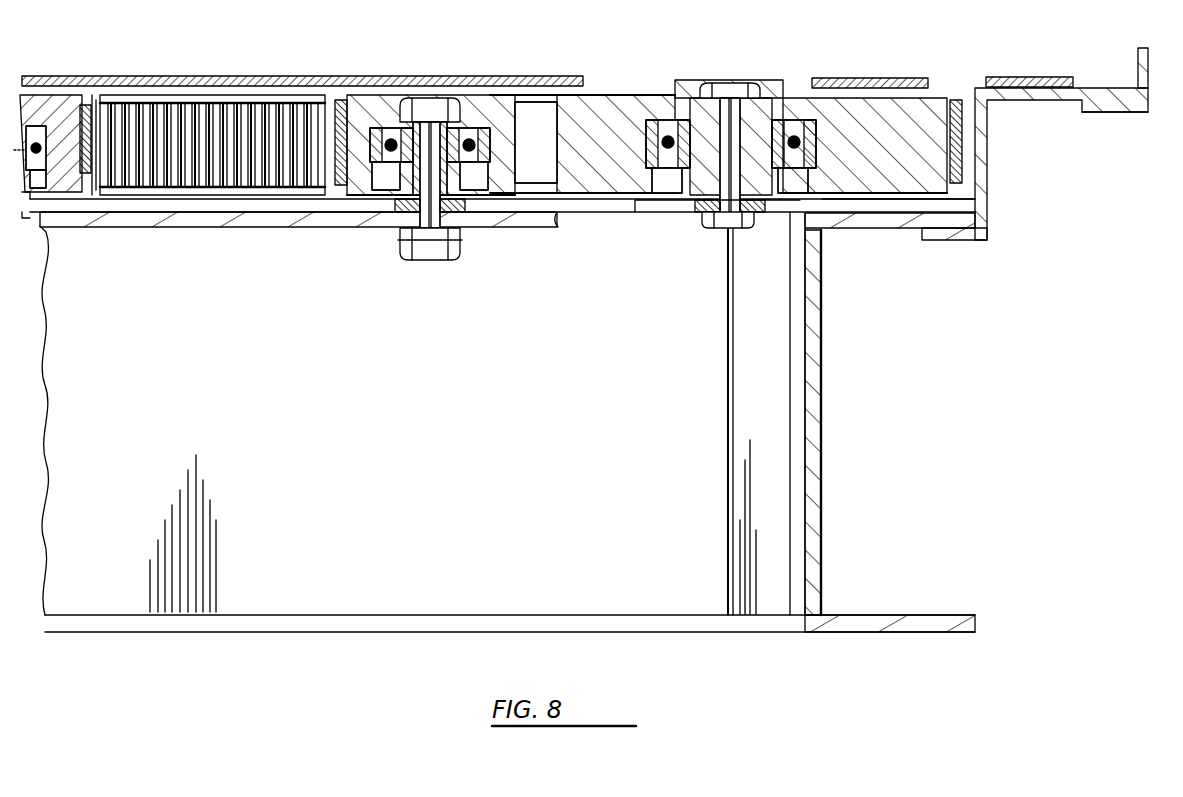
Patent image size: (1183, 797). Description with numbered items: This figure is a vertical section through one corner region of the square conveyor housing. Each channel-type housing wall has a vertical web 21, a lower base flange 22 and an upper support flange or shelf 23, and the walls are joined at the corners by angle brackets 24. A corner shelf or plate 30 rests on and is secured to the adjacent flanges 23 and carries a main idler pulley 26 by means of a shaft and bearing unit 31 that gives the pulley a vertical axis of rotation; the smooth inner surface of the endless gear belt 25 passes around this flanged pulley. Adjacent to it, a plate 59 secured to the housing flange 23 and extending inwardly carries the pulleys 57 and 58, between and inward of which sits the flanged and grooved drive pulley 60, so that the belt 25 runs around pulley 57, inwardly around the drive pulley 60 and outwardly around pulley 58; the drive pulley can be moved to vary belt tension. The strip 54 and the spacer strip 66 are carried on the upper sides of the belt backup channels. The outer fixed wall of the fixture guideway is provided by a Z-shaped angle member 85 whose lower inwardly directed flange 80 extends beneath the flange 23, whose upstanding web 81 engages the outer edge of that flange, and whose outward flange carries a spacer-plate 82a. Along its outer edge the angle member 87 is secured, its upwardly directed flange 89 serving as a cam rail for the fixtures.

The vertical web 21 is at (823, 410).
The lower base flange 22 is at (908, 614).
The upper support flange 23 is at (560, 220).
The angle bracket 24 is at (727, 497).
The endless gear belt 25 is at (342, 100).
The main idler pulley 26 is at (870, 100).
The corner shelf or plate 30 is at (880, 200).
The shaft and bearing unit 31 is at (783, 82).
The strip 54 is at (400, 76).
The pulley 57 is at (80, 90).
The pulley 58 is at (470, 100).
The plate 59 is at (345, 205).
The drive pulley 60 is at (270, 95).
The spacer strip 66 is at (830, 78).
The lower inwardly directed flange 80 is at (955, 240).
The upstanding web 81 is at (988, 160).
The spacer-plate 82a is at (1055, 58).
The angle member 85 is at (988, 230).
The angle member 87 is at (1148, 106).
The upwardly directed flange 89 is at (1136, 48).